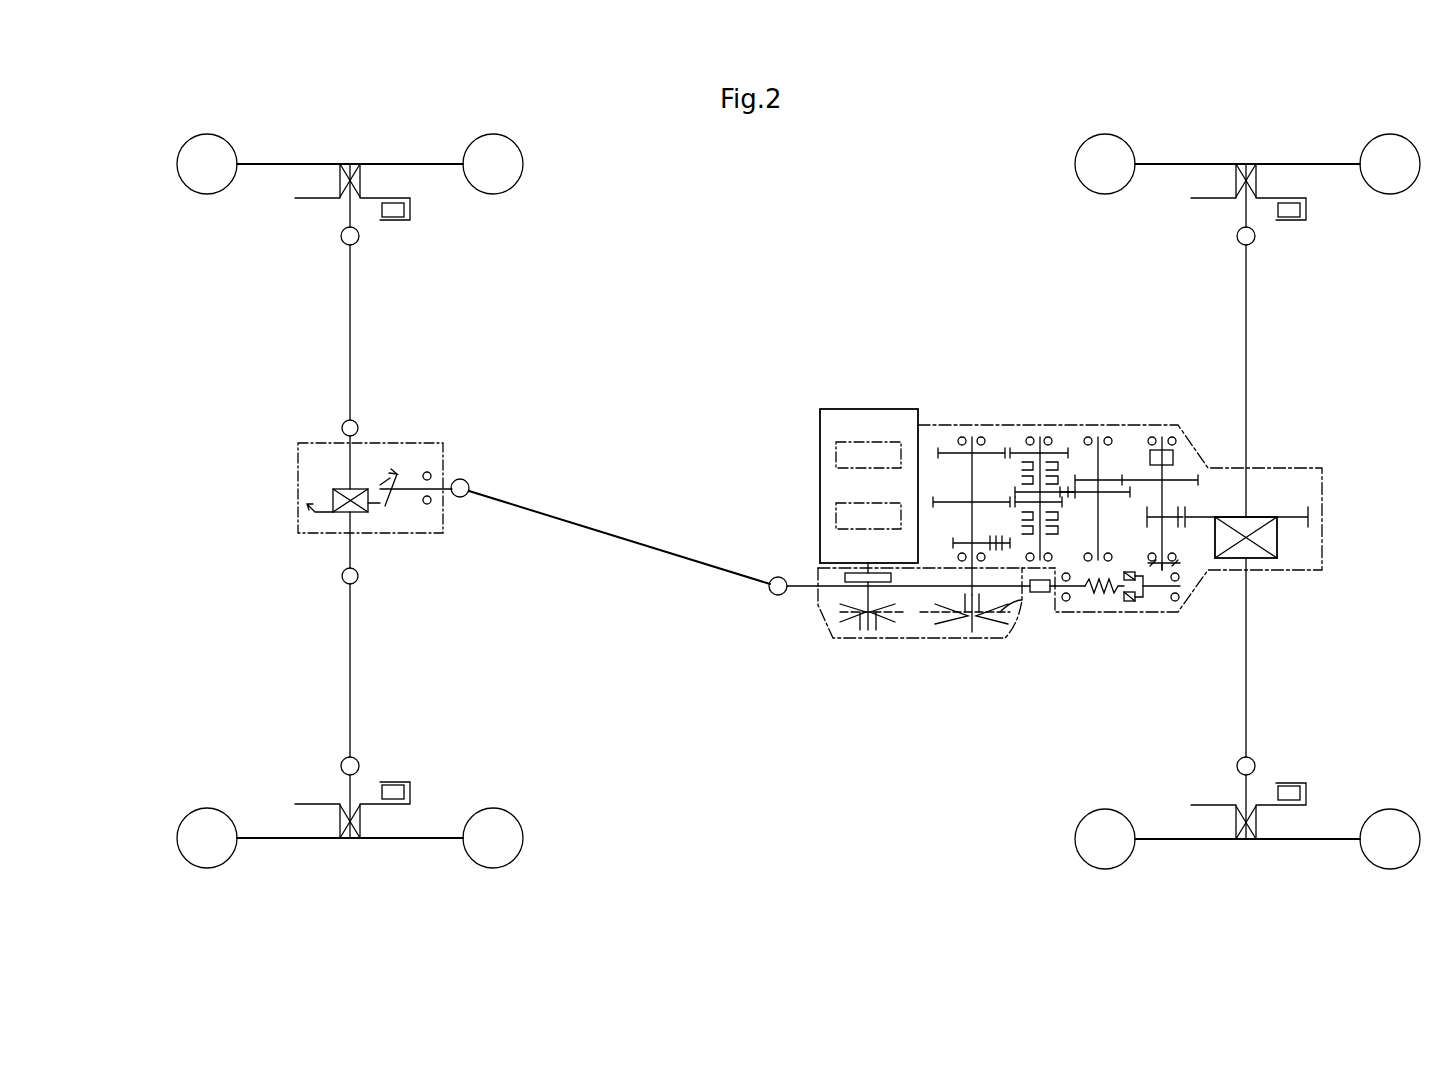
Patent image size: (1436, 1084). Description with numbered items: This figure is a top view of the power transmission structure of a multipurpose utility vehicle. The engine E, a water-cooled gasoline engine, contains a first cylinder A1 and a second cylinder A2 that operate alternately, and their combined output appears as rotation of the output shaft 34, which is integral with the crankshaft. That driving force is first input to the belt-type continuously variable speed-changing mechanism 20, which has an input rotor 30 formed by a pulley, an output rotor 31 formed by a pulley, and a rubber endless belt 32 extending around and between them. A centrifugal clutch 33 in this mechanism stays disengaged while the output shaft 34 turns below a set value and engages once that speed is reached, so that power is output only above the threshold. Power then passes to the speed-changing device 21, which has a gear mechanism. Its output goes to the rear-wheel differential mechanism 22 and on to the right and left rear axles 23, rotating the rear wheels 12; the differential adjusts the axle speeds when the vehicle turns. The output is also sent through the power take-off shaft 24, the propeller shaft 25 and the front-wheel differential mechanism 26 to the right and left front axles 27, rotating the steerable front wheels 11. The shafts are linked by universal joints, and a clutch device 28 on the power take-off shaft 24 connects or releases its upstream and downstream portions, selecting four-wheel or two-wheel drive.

The front wheels 11 is at (207, 137).
The rear wheels 12 is at (1075, 170).
The front axles 27 is at (350, 328).
The front-wheel differential mechanism 26 is at (398, 533).
The propeller shaft 25 is at (600, 535).
The rear axles 23 is at (1247, 330).
The speed-changing device 21 is at (1092, 425).
The rear-wheel differential mechanism 22 is at (1277, 540).
The clutch device 28 is at (1118, 598).
The belt-type continuously variable speed-changing mechanism 20 is at (838, 650).
The power take-off shaft 24 is at (805, 590).
The centrifugal clutch 33 is at (868, 574).
The output shaft 34 is at (845, 574).
The input rotor 30 is at (888, 620).
The endless belt 32 is at (935, 615).
The output rotor 31 is at (1000, 620).
The engine E is at (870, 407).
The first cylinder A1 is at (836, 455).
The second cylinder A2 is at (836, 517).